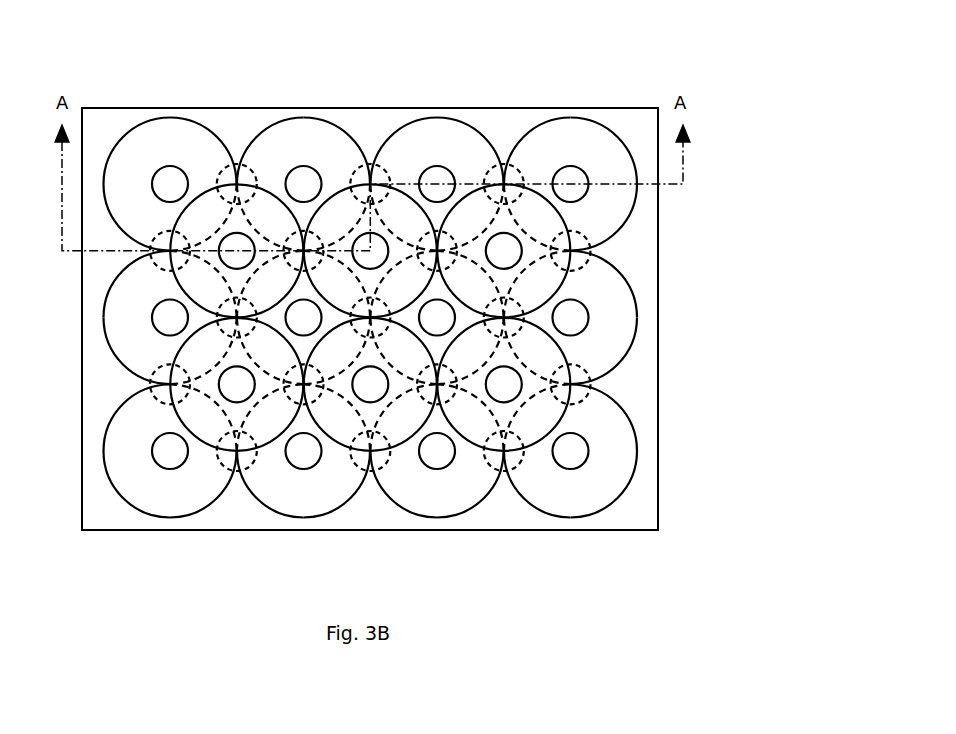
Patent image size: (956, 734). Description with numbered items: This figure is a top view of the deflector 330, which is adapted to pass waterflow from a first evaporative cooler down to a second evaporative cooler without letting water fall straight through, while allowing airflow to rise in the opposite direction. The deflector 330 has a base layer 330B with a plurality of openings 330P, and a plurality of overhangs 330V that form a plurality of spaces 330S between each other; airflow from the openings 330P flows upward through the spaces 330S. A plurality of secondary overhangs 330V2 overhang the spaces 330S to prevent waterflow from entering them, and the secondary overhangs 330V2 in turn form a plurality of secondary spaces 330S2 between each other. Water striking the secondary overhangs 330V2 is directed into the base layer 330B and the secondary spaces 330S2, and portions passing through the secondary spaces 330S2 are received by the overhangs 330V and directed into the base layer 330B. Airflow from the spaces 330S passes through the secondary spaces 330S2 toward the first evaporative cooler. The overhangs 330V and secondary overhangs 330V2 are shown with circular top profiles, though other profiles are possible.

The deflector 330 is at (736, 46).
The base layer 330B is at (128, 118).
The openings 330P is at (490, 170).
The overhangs 330V is at (582, 133).
The spaces 330S is at (538, 243).
The secondary overhangs 330V2 is at (555, 278).
The secondary spaces 330S2 is at (462, 317).